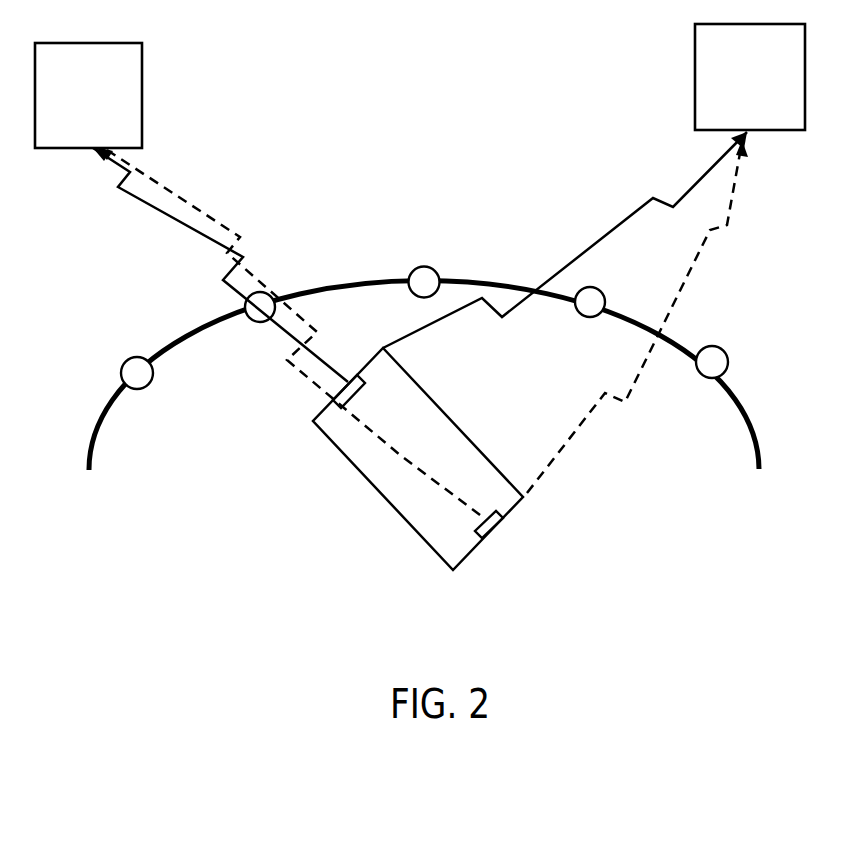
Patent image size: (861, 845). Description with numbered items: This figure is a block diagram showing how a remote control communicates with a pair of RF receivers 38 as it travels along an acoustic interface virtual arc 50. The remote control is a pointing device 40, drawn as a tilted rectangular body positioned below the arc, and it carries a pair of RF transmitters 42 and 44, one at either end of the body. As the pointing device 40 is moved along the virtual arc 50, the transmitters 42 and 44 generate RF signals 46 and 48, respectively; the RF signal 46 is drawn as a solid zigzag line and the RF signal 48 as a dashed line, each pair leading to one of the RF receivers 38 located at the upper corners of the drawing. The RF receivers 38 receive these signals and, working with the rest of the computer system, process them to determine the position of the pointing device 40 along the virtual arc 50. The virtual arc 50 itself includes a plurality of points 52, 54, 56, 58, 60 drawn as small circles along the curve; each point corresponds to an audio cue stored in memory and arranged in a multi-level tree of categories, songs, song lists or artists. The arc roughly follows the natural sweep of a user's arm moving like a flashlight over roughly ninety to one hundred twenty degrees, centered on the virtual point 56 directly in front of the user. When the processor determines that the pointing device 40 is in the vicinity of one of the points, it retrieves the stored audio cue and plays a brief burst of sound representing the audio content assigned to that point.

The RF receivers 38 is at (760, 106).
The pointing device 40 is at (433, 456).
The RF transmitter 42 is at (359, 404).
The RF transmitter 44 is at (477, 522).
The RF signal 46 is at (173, 217).
The RF signal 48 is at (170, 197).
The virtual arc 50 is at (353, 278).
The point 52 is at (125, 362).
The point 54 is at (264, 292).
The virtual point 56 is at (427, 266).
The point 58 is at (603, 291).
The point 60 is at (722, 346).